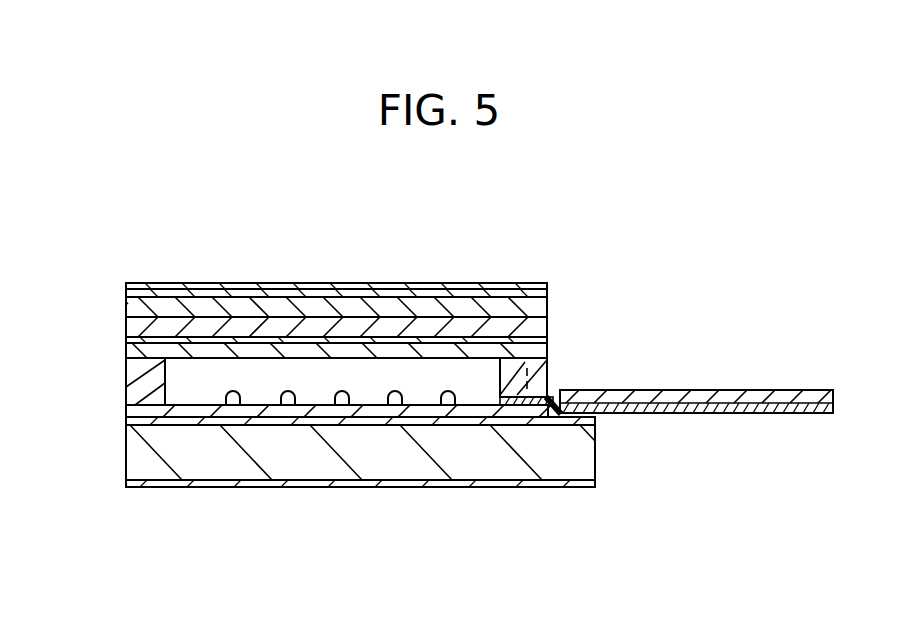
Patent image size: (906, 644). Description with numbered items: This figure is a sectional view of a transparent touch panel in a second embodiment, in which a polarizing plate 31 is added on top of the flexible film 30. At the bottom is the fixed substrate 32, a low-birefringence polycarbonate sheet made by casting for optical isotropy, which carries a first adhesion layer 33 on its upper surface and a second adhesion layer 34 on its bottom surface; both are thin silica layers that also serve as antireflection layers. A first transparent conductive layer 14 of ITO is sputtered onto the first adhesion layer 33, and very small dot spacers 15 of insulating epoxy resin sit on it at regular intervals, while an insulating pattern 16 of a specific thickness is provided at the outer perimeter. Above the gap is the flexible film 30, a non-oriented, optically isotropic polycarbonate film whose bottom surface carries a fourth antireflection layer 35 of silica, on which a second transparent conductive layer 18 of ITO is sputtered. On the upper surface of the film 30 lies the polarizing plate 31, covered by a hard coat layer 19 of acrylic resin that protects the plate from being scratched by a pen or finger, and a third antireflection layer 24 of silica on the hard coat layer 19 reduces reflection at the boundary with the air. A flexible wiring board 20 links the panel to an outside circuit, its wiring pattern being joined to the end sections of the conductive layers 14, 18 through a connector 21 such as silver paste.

The first transparent conductive layer 14 is at (215, 413).
The dot spacers 15 is at (288, 407).
The insulating pattern 16 is at (127, 398).
The second transparent conductive layer 18 is at (127, 352).
The hard coat layer 19 is at (205, 297).
The flexible wiring board 20 is at (690, 388).
The connector 21 is at (553, 397).
The third antireflection layer 24 is at (134, 286).
The flexible film 30 is at (238, 327).
The polarizing plate 31 is at (163, 305).
The fixed substrate 32 is at (385, 470).
The first adhesion layer 33 is at (260, 417).
The second adhesion layer 34 is at (447, 487).
The fourth antireflection layer 35 is at (299, 333).